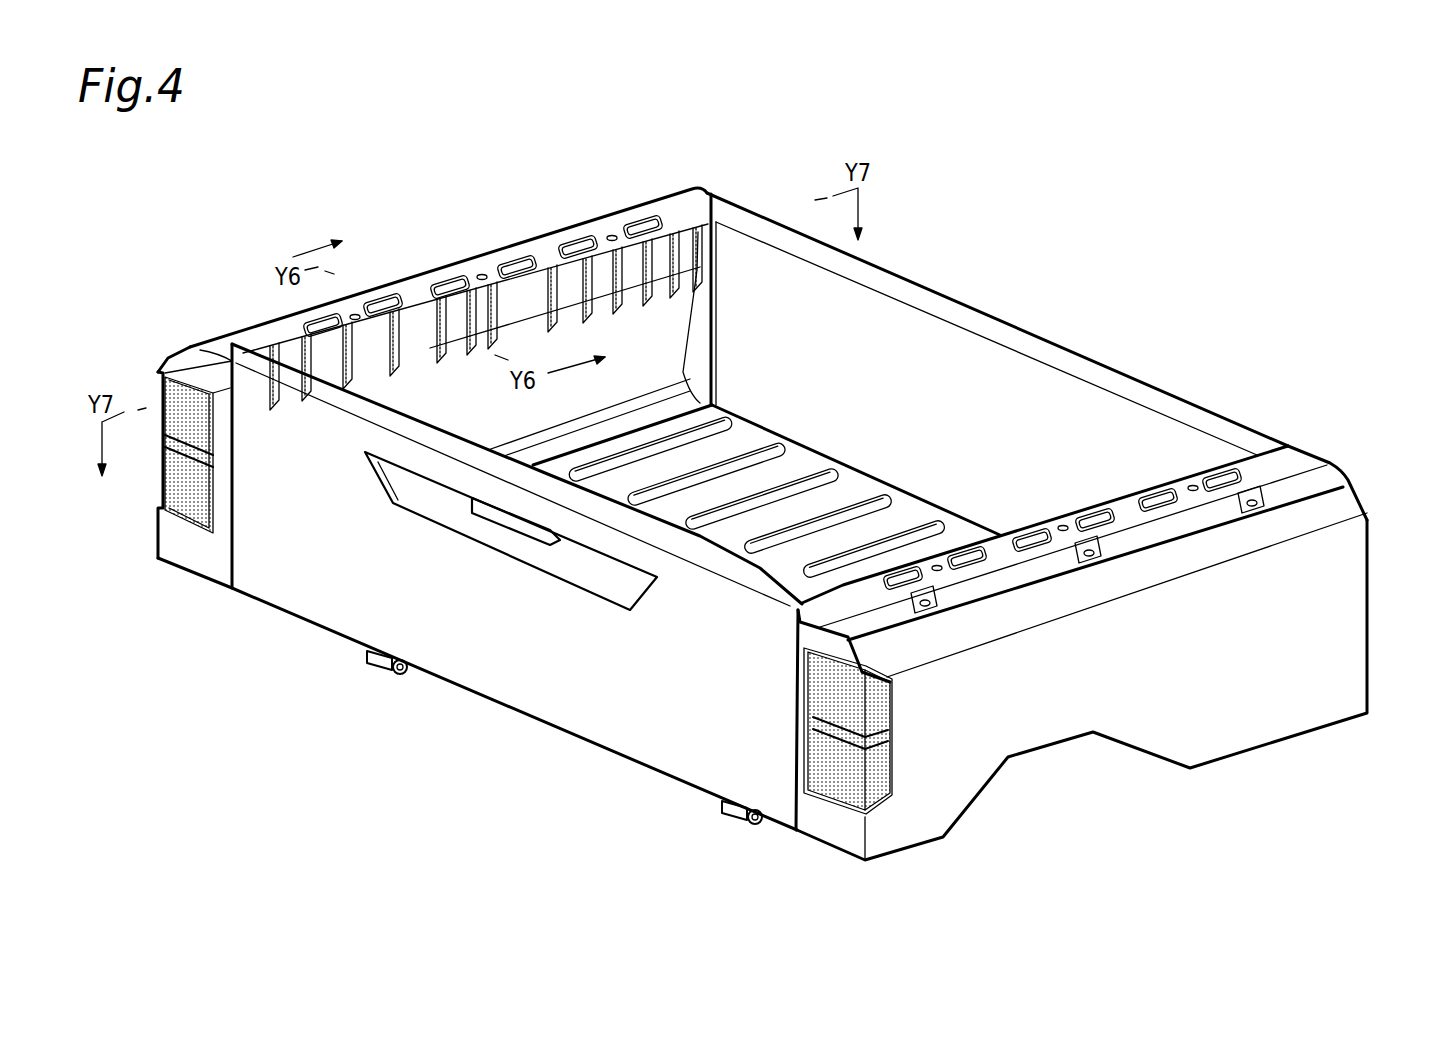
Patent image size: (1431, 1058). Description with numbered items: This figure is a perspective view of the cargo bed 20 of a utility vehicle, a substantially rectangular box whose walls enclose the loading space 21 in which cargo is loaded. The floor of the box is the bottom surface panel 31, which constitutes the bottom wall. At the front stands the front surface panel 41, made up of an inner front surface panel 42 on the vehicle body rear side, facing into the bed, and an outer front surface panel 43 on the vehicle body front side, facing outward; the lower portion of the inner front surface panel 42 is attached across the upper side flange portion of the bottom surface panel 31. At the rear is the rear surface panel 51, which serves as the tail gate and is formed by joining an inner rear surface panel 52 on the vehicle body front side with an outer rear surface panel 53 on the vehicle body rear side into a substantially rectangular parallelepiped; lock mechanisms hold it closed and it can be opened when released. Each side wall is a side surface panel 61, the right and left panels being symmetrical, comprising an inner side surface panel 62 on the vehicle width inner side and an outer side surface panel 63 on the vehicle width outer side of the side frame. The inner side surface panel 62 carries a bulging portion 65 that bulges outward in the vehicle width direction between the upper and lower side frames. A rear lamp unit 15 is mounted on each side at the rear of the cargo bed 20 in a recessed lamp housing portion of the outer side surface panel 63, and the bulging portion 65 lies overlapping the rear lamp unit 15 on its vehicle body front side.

The rear lamp unit 15 is at (175, 492).
The cargo bed 20 is at (1027, 293).
The loading space 21 is at (892, 363).
The bottom surface panel 31 is at (790, 458).
The front surface panel 41 is at (1117, 377).
The inner front surface panel 42 is at (1077, 400).
The outer front surface panel 43 is at (1160, 387).
The rear surface panel 51 is at (252, 587).
The inner rear surface panel 52 is at (433, 422).
The outer rear surface panel 53 is at (313, 570).
The side surface panel 61 is at (670, 206).
The inner side surface panel 62 is at (694, 268).
The outer side surface panel 63 is at (622, 213).
The bulging portion 65 is at (682, 375).